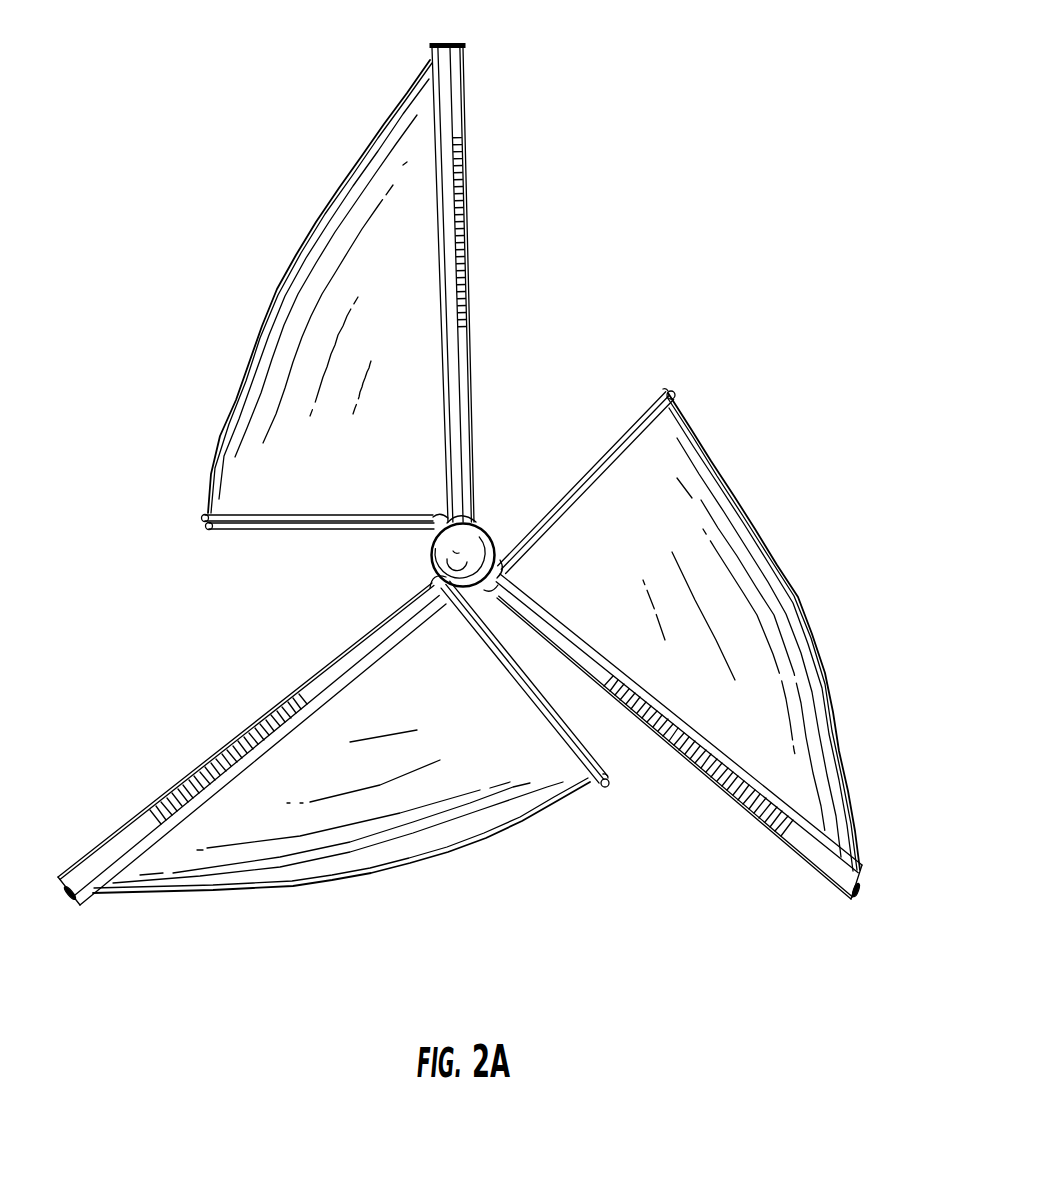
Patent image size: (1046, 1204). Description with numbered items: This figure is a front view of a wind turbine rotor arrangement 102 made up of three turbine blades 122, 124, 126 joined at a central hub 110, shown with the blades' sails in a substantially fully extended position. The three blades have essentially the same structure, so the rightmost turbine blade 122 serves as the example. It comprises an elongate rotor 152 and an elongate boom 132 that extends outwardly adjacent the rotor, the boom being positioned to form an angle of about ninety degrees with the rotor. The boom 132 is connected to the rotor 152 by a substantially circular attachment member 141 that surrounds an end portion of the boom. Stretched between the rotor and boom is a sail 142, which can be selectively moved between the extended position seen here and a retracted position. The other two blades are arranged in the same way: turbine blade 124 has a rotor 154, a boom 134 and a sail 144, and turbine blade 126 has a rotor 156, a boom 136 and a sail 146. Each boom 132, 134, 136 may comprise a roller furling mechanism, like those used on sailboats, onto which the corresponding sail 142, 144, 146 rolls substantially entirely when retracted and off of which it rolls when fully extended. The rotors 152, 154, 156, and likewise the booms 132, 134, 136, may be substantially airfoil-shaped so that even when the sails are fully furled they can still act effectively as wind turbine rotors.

The wind turbine rotor assembly 102 is at (709, 247).
The hub 110 is at (438, 548).
The turbine blade 122 is at (824, 652).
The turbine blade 124 is at (176, 915).
The turbine blade 126 is at (480, 272).
The boom 132 is at (643, 463).
The boom 134 is at (574, 757).
The boom 136 is at (308, 522).
The attachment member 141 is at (492, 590).
The sail 142 is at (815, 727).
The sail 144 is at (418, 838).
The sail 146 is at (262, 338).
The rotor 152 is at (758, 812).
The rotor 154 is at (207, 772).
The rotor 156 is at (457, 130).